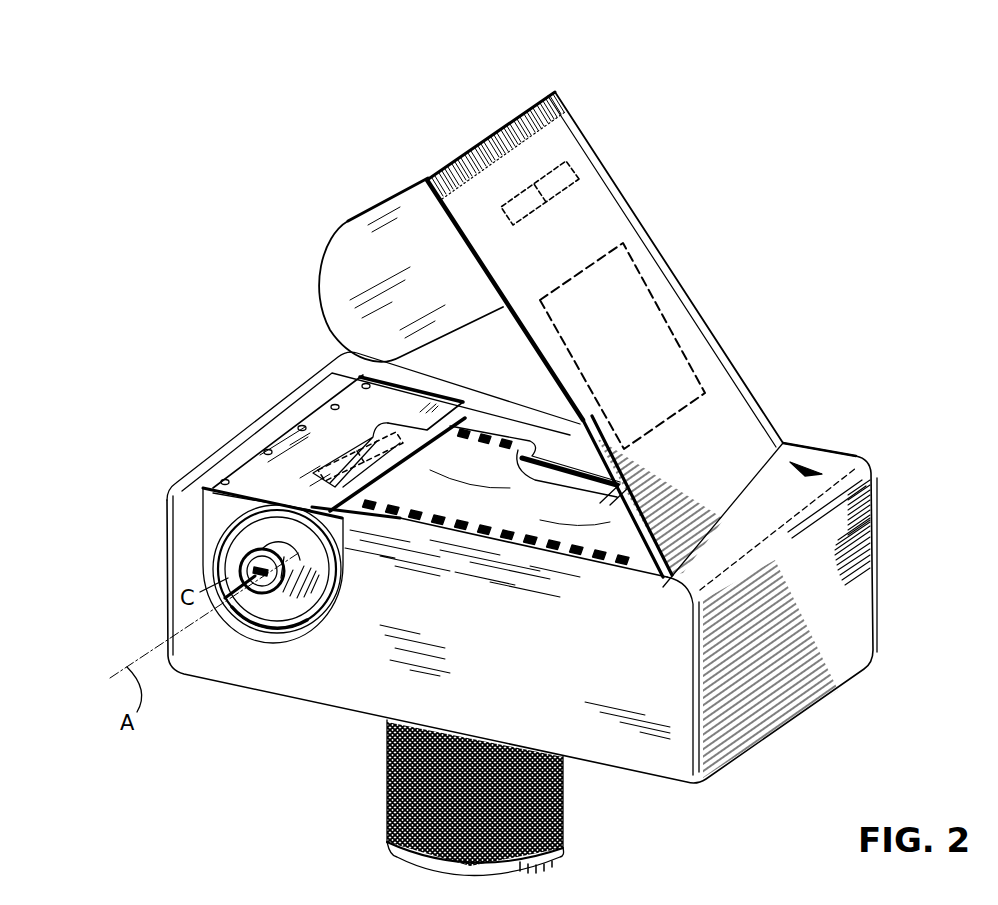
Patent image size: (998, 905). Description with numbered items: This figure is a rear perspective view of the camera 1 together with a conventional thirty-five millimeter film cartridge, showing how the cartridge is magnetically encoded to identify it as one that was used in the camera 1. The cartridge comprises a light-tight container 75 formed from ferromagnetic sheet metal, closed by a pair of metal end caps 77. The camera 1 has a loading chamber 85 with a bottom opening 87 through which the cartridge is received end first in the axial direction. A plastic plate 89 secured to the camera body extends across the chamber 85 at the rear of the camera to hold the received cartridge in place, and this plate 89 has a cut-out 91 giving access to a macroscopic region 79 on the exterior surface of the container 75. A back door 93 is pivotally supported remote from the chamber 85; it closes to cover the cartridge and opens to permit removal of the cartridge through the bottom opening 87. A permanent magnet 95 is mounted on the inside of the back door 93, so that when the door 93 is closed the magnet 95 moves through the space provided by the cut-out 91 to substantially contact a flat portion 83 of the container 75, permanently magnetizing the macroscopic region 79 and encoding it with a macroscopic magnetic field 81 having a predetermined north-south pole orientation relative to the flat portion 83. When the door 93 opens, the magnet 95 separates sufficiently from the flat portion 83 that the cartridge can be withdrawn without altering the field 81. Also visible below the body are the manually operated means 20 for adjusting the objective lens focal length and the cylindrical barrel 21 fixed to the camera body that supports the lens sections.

The camera 1 is at (869, 668).
The manually operated means 20 is at (565, 814).
The cylindrical barrel 21 is at (562, 857).
The light-tight container 75 is at (337, 540).
The metal end caps 77 is at (307, 600).
The macroscopic region 79 is at (388, 468).
The macroscopic magnetic field 81 is at (372, 462).
The flat portion 83 is at (437, 437).
The loading chamber 85 is at (213, 548).
The bottom opening 87 is at (235, 618).
The plastic plate 89 is at (250, 472).
The cut-out 91 is at (394, 424).
The back door 93 is at (676, 276).
The permanent magnet 95 is at (548, 200).